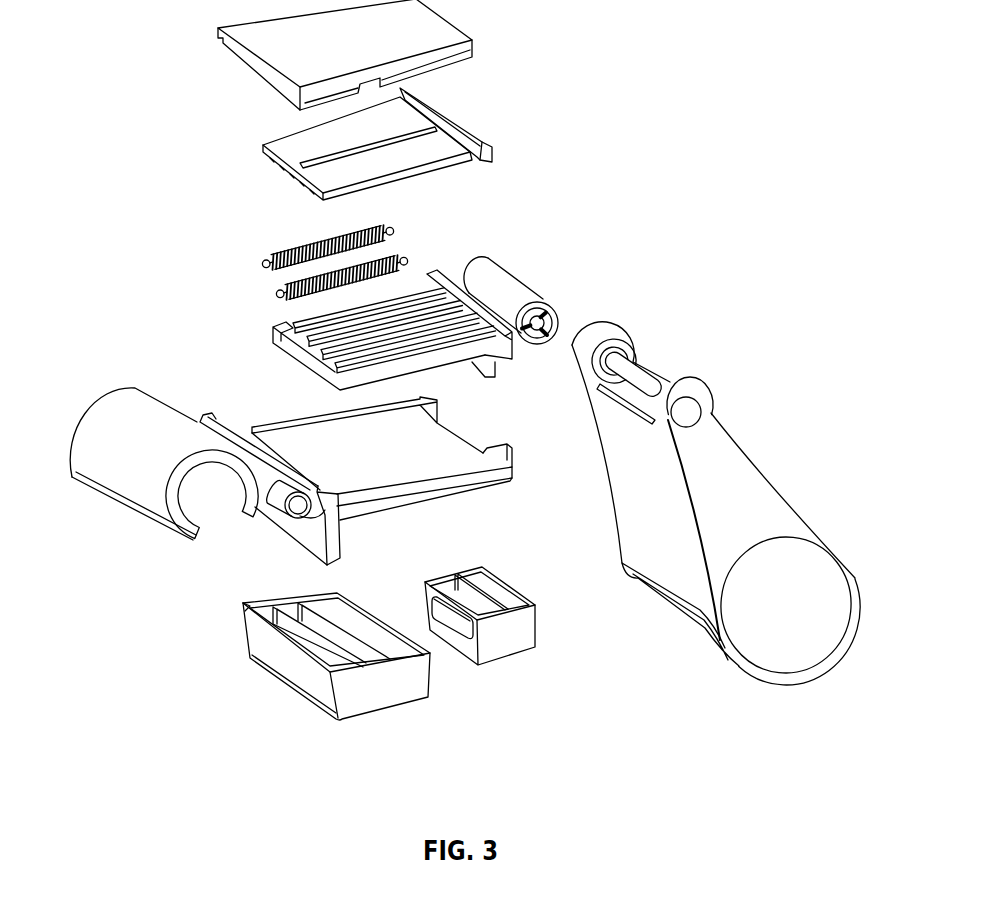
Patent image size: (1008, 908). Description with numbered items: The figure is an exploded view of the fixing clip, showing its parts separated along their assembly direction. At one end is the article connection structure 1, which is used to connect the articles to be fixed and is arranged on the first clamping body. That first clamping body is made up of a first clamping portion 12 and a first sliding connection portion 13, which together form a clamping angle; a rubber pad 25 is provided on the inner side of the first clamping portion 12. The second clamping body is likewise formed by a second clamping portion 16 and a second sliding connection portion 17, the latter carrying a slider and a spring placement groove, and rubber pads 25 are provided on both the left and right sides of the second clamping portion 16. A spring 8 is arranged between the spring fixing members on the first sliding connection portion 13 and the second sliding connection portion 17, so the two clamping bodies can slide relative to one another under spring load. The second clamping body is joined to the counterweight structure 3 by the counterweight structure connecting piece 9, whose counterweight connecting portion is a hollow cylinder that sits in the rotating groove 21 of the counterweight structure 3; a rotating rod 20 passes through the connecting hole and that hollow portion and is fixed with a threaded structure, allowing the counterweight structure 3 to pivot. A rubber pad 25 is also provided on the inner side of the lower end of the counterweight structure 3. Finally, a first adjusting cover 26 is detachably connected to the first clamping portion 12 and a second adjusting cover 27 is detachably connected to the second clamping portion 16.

The article connection structure 1 is at (140, 440).
The counterweight structure 3 is at (722, 462).
The spring 8 is at (393, 229).
The counterweight structure connecting piece 9 is at (558, 322).
The first clamping portion 12 is at (310, 540).
The first sliding connection portion 13 is at (348, 460).
The second clamping portion 16 is at (541, 302).
The second sliding connection portion 17 is at (484, 278).
The rotating rod 20 is at (641, 375).
The rotating groove 21 is at (633, 397).
The rubber pad 25 is at (683, 620).
The first adjusting cover 26 is at (298, 667).
The second adjusting cover 27 is at (518, 643).